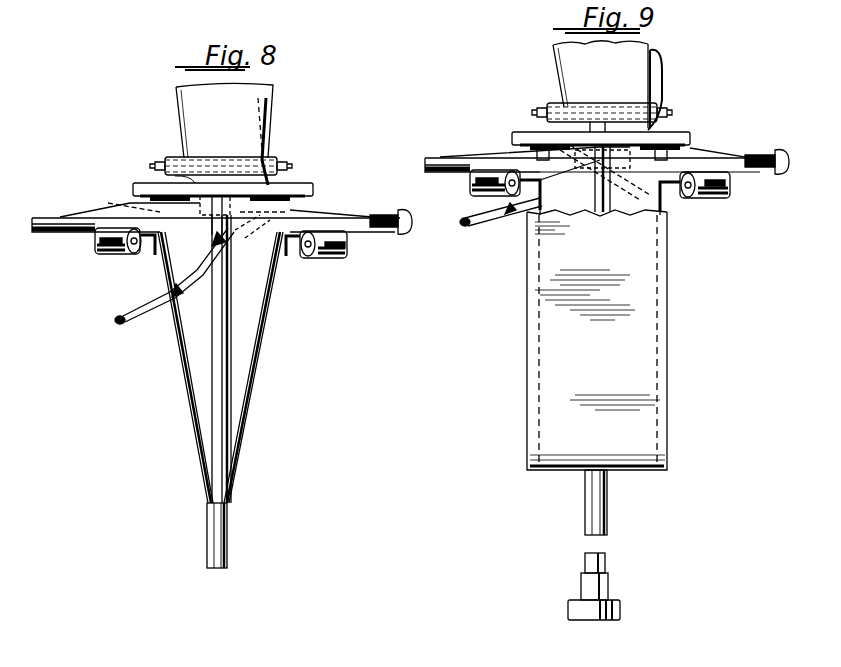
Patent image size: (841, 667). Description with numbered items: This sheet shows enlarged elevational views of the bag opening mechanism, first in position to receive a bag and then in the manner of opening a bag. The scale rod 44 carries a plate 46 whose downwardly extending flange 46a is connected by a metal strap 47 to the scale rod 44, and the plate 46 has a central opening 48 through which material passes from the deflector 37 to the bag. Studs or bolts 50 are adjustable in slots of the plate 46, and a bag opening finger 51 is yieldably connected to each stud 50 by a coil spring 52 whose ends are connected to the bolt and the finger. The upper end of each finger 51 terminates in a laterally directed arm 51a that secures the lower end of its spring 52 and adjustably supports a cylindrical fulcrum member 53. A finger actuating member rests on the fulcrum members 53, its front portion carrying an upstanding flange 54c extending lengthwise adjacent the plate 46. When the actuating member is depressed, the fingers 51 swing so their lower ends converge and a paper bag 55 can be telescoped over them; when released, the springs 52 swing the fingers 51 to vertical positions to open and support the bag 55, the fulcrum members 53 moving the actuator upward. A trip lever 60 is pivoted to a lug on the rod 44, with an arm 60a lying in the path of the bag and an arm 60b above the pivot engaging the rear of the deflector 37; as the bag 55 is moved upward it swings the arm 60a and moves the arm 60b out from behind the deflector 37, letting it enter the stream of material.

In FIG. 8, the deflector 37 is at (192, 103).
In FIG. 9, the deflector 37 is at (636, 58).
In FIG. 8, the scale rod 44 is at (227, 534).
In FIG. 9, the scale rod 44 is at (588, 497).
In FIG. 8, the plate 46 is at (288, 190).
In FIG. 9, the plate 46 is at (676, 136).
In FIG. 8, the downwardly extending flange 46a is at (236, 240).
In FIG. 8, the metal strap 47 is at (196, 193).
In FIG. 8, the central opening 48 is at (423, 7).
In FIG. 8, the stud 50 is at (140, 197).
In FIG. 9, the stud 50 is at (601, 140).
In FIG. 8, the bag opening finger 51 is at (192, 412).
In FIG. 9, the bag opening finger 51 is at (530, 212).
In FIG. 8, the laterally directed arm 51a is at (155, 258).
In FIG. 9, the laterally directed arm 51a is at (690, 196).
In FIG. 8, the coil spring 52 is at (262, 222).
In FIG. 9, the coil spring 52 is at (662, 182).
In FIG. 8, the cylindrical fulcrum member 53 is at (122, 254).
In FIG. 9, the cylindrical fulcrum member 53 is at (738, 163).
In FIG. 8, the upstanding flange 54c is at (100, 214).
In FIG. 9, the upstanding flange 54c is at (712, 160).
In FIG. 9, the paper bag 55 is at (640, 358).
In FIG. 8, the trip lever 60 is at (125, 322).
In FIG. 9, the trip lever 60 is at (475, 214).
In FIG. 8, the arm 60a is at (190, 272).
In FIG. 9, the arm 60a is at (468, 228).
In FIG. 8, the arm 60b is at (273, 132).
In FIG. 9, the arm 60b is at (661, 68).